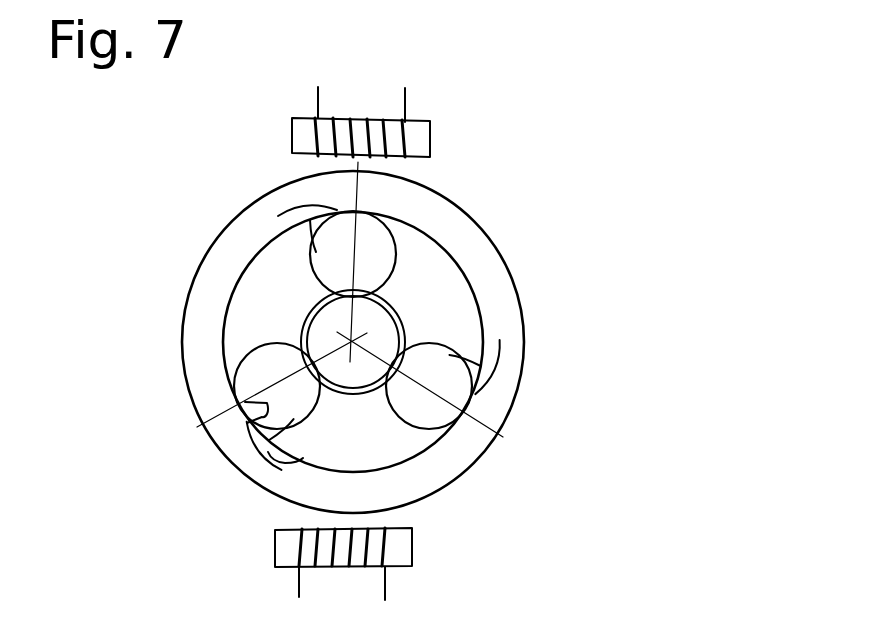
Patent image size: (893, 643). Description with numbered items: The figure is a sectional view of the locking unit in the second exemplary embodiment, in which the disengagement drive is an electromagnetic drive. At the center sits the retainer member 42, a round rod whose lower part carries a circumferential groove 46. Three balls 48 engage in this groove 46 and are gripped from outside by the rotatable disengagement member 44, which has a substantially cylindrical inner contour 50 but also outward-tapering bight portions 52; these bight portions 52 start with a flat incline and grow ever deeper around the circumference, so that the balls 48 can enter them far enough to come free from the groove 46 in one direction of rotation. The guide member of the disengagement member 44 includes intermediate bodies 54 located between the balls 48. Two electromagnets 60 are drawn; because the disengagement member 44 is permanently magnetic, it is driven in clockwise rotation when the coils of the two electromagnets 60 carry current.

The retainer member 42 is at (378, 333).
The disengagement member 44 is at (437, 224).
The circumferential groove 46 is at (312, 322).
The balls 48 is at (252, 381).
The cylindrical inner contour 50 is at (250, 425).
The bight portions 52 is at (287, 455).
The intermediate bodies 54 is at (275, 276).
The electromagnet 60 is at (307, 129).